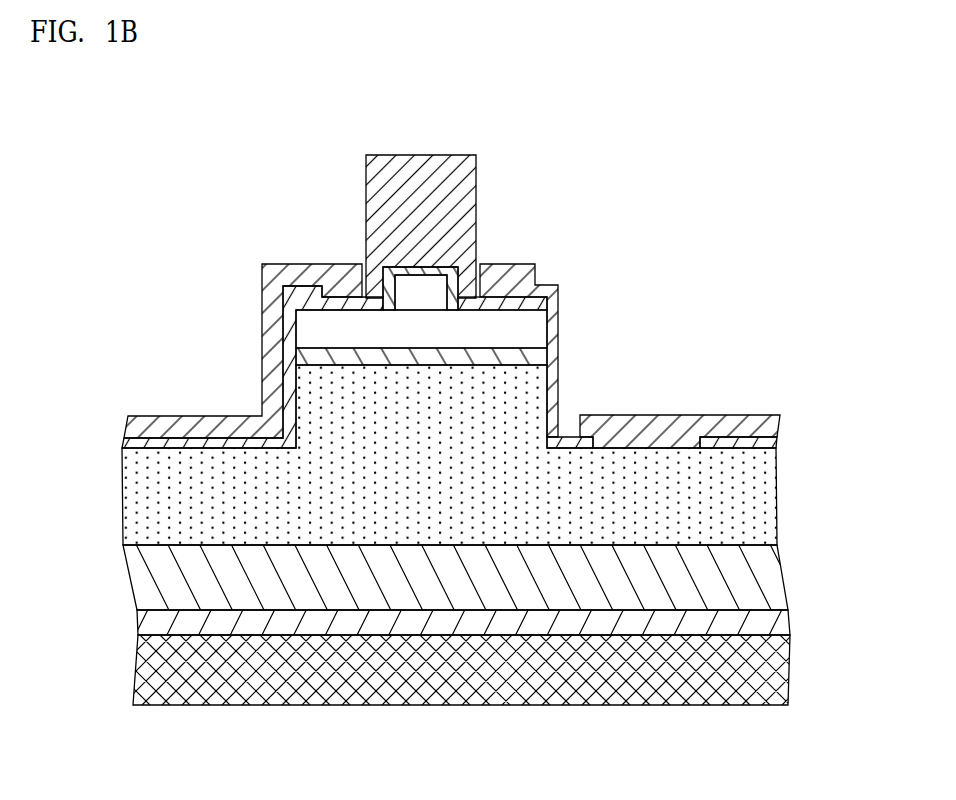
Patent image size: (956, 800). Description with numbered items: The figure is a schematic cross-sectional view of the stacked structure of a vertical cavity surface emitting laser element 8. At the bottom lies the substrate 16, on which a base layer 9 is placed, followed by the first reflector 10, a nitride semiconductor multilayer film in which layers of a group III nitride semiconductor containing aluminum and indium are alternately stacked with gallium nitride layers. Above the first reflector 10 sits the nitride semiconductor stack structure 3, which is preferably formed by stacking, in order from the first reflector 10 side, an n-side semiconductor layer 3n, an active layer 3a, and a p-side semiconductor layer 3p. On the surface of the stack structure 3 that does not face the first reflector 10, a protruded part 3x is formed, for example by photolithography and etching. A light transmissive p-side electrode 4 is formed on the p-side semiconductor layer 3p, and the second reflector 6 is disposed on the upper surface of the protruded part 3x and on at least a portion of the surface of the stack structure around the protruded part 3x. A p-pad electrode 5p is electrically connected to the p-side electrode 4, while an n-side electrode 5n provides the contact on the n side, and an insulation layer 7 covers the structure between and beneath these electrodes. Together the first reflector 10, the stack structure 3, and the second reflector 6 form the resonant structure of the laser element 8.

The vertical cavity surface emitting laser element 8 is at (753, 285).
The substrate 16 is at (755, 672).
The base layer 9 is at (758, 621).
The first reflector 10 is at (748, 577).
The nitride semiconductor stack structure 3 is at (640, 290).
The n-side semiconductor layer 3n is at (548, 385).
The active layer 3a is at (548, 356).
The p-side semiconductor layer 3p is at (548, 316).
The protruded part 3x is at (408, 286).
The insulation layer 7 is at (217, 440).
The p-pad electrode 5p is at (160, 420).
The n-side electrode 5n is at (703, 415).
The second reflector 6 is at (452, 185).
The p-side electrode 4 is at (433, 263).